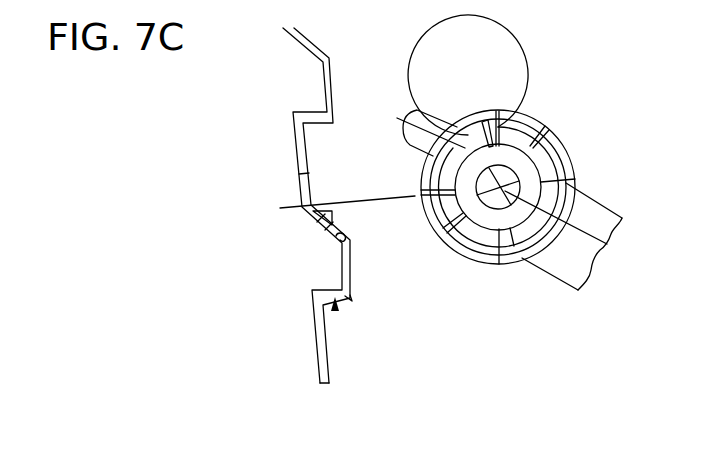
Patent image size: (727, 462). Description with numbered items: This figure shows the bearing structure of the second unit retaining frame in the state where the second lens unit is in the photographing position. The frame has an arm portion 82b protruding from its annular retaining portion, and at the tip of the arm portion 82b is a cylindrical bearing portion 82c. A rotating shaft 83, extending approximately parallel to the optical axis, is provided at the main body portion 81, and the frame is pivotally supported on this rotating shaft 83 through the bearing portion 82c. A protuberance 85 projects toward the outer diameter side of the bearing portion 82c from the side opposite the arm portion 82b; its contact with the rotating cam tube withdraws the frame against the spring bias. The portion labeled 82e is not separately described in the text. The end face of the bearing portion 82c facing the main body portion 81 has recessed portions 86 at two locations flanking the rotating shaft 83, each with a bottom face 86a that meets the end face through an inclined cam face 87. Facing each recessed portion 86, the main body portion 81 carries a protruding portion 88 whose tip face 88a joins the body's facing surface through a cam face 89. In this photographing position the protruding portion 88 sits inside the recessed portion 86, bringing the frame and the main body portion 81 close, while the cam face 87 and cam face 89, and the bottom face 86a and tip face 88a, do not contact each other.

The main body portion 81 is at (320, 358).
The arm portion 82b is at (550, 278).
The bearing portion 82c is at (300, 175).
The cutout 82e is at (490, 153).
The rotating shaft 83 is at (504, 168).
The protuberance 85 is at (438, 110).
The recessed portion 86 is at (337, 311).
The bottom face 86a is at (353, 300).
The cam face 87 is at (332, 211).
The protruding portion 88 is at (307, 276).
The tip face 88a is at (343, 234).
The cam face 89 is at (317, 213).